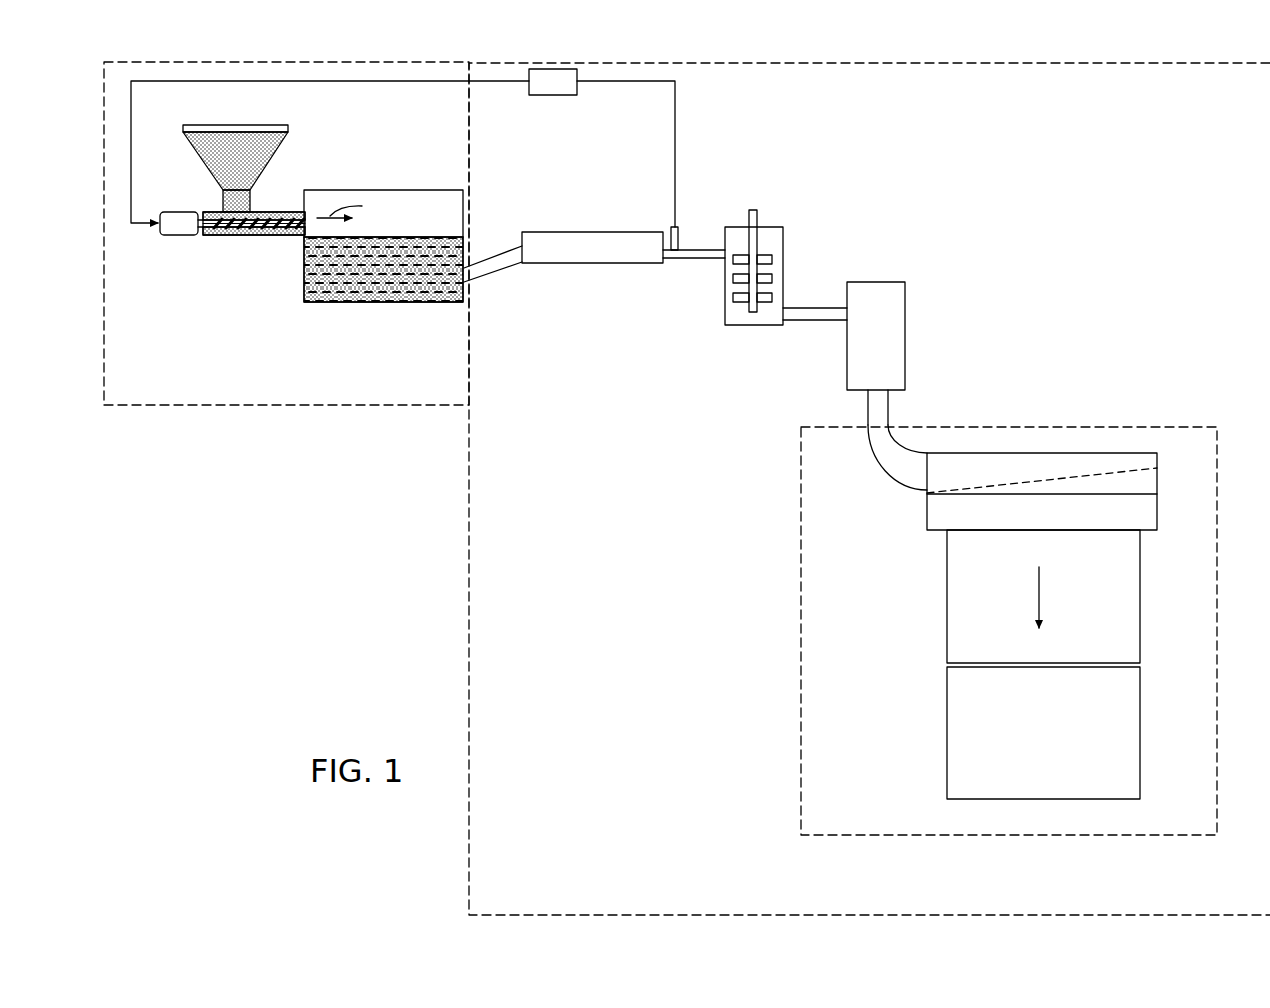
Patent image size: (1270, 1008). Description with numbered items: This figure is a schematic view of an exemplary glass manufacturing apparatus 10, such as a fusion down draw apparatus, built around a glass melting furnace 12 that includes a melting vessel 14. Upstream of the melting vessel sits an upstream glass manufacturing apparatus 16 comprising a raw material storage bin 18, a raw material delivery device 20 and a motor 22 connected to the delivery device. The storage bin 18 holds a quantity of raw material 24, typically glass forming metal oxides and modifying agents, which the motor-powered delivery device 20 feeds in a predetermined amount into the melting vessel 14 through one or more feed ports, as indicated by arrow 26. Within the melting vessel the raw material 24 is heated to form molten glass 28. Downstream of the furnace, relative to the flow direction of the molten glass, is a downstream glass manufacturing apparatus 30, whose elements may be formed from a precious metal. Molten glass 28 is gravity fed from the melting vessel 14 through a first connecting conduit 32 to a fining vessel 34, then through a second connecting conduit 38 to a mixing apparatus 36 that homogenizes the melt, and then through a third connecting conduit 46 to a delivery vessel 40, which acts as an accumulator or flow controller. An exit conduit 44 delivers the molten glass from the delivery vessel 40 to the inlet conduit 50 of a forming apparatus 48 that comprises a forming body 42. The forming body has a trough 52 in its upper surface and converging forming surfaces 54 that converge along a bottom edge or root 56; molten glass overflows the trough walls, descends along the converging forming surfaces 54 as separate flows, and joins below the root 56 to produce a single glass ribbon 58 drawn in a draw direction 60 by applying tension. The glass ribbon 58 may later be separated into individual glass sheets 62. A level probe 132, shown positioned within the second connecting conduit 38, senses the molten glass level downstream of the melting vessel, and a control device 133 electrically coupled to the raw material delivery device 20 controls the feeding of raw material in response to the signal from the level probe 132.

The glass manufacturing apparatus 10 is at (389, 469).
The glass melting furnace 12 is at (317, 406).
The melting vessel 14 is at (382, 257).
The upstream glass manufacturing apparatus 16 is at (205, 262).
The raw material storage bin 18 is at (263, 166).
The raw material delivery device 20 is at (272, 237).
The motor 22 is at (173, 212).
The raw material 24 is at (243, 162).
The arrow 26 is at (355, 210).
The molten glass 28 is at (333, 290).
The downstream glass manufacturing apparatus 30 is at (705, 63).
The first connecting conduit 32 is at (500, 268).
The fining vessel 34 is at (575, 265).
The mixing apparatus 36 is at (785, 250).
The second connecting conduit 38 is at (713, 262).
The delivery vessel 40 is at (845, 342).
The forming body 42 is at (1042, 472).
The exit conduit 44 is at (892, 407).
The third connecting conduit 46 is at (812, 322).
The forming apparatus 48 is at (1217, 633).
The inlet conduit 50 is at (887, 473).
The trough 52 is at (1093, 475).
The converging forming surfaces 54 is at (938, 516).
The root 56 is at (1122, 532).
The glass ribbon 58 is at (1039, 596).
The draw direction 60 is at (1039, 605).
The glass sheets 62 is at (947, 708).
The level probe 132 is at (680, 238).
The control device 133 is at (557, 95).